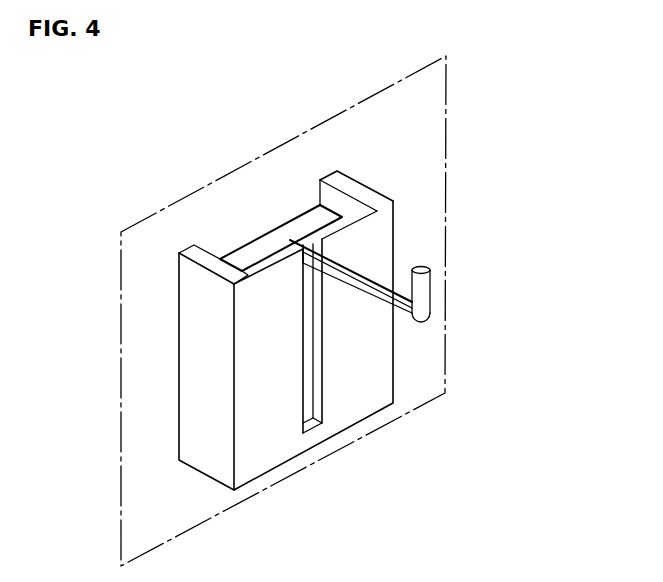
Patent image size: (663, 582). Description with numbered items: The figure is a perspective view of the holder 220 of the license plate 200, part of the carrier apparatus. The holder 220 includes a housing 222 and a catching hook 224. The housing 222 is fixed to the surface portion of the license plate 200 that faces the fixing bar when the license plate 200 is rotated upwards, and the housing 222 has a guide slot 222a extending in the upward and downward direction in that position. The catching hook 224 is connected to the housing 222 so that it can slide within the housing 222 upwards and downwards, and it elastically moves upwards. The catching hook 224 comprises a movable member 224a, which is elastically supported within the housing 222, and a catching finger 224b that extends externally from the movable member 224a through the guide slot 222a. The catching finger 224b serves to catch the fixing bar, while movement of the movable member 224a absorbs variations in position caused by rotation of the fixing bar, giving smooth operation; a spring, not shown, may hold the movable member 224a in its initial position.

The license plate 200 is at (417, 132).
The holder 220 is at (327, 316).
The housing 222 is at (256, 330).
The guide slot 222a is at (316, 383).
The catching hook 224 is at (417, 232).
The movable member 224a is at (340, 208).
The catching finger 224b is at (425, 267).